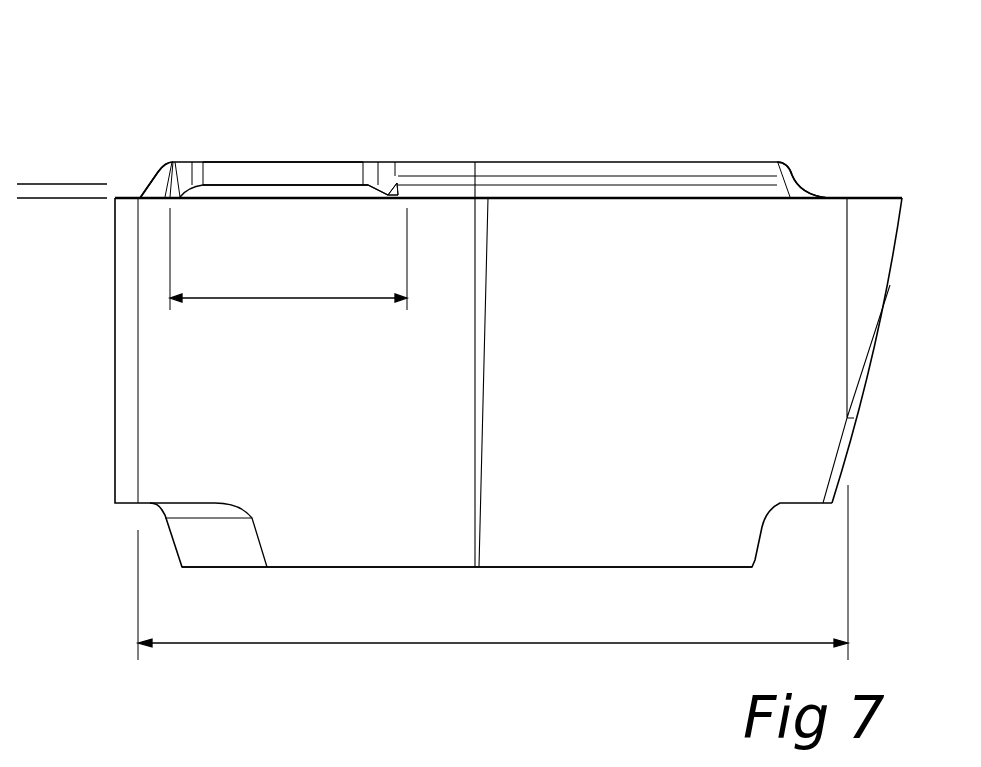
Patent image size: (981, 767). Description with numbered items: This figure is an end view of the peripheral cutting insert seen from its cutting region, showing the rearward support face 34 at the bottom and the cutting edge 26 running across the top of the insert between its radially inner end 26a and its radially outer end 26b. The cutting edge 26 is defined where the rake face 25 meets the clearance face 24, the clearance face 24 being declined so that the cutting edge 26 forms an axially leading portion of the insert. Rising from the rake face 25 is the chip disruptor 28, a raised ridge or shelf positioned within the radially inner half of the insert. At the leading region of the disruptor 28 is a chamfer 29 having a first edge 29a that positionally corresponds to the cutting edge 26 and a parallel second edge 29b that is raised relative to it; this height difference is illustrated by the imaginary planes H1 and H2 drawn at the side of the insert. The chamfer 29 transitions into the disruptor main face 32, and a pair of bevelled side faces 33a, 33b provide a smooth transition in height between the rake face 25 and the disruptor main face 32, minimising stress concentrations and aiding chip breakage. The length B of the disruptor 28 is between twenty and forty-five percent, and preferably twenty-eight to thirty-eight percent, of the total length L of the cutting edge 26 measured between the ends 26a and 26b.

The clearance face 24 is at (508, 364).
The rake face 25 is at (557, 181).
The cutting edge 26 is at (632, 197).
The radially inner end 26a is at (138, 198).
The radially outer end 26b is at (848, 198).
The chip disruptor 28 is at (280, 75).
The chamfer 29 is at (342, 191).
The first edge 29a is at (318, 193).
The second edge 29b is at (245, 183).
The disruptor main face 32 is at (297, 173).
The bevelled side face 33a is at (185, 187).
The bevelled side face 33b is at (397, 190).
The rearward support face 34 is at (598, 567).
The length of disruptor B is at (288, 259).
The total axial length of cutting edge L is at (493, 572).
The imaginary plane H1 is at (42, 200).
The imaginary plane H2 is at (38, 184).